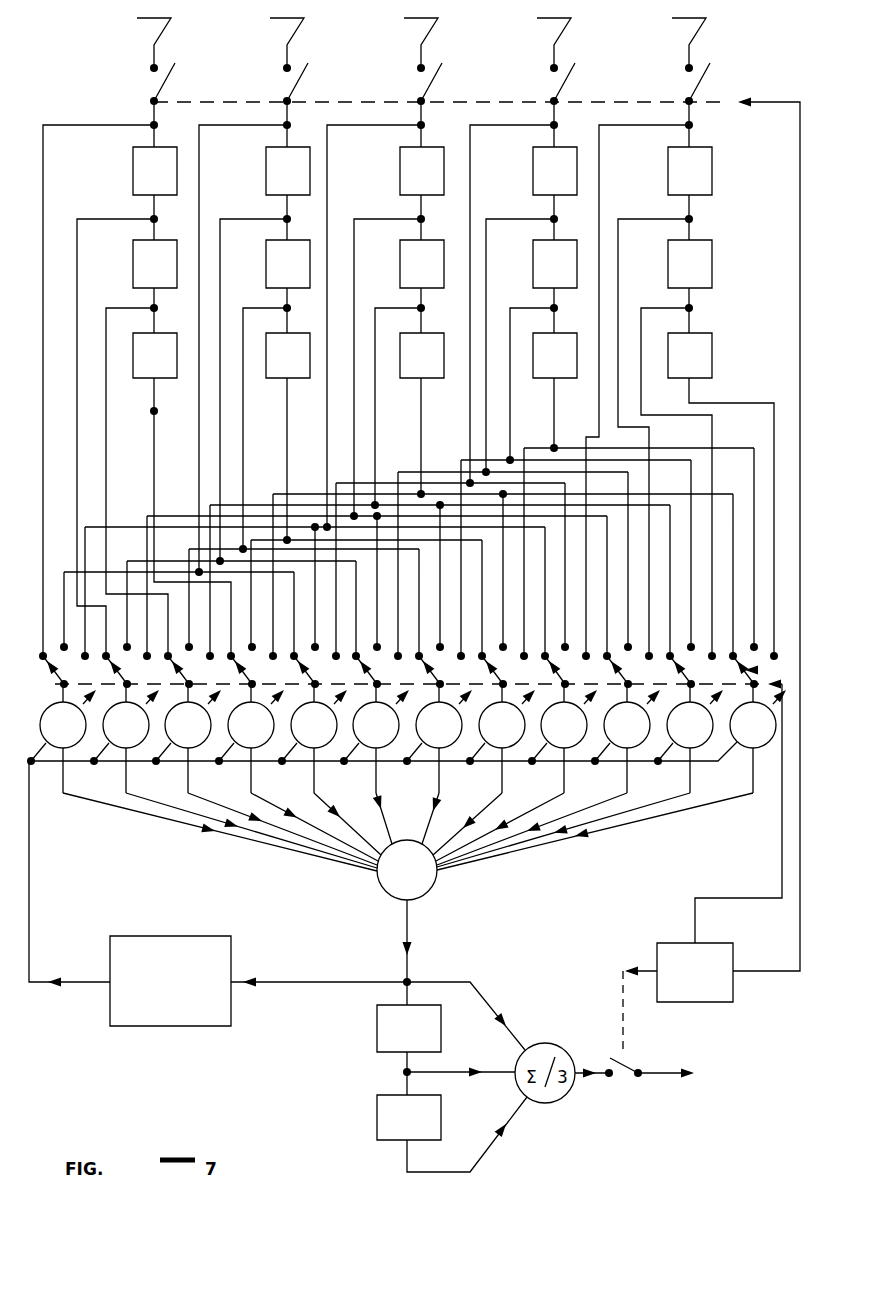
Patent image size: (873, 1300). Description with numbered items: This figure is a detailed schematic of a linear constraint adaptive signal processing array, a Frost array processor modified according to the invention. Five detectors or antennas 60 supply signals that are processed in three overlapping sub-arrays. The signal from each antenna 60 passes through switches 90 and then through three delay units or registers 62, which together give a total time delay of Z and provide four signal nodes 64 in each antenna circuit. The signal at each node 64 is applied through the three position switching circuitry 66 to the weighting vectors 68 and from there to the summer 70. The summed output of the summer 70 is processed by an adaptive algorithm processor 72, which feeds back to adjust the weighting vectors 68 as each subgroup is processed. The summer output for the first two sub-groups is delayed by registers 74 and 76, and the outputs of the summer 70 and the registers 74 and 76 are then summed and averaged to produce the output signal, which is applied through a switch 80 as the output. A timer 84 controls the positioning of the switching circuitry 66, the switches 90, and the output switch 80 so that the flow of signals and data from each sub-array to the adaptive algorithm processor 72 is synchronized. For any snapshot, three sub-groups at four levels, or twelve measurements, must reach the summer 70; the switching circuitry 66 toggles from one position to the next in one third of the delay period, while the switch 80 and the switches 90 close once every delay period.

The antennas 60 is at (406, 10).
The delay units 62 is at (134, 152).
The signal nodes 64 is at (152, 125).
The three position switching circuitry 66 is at (50, 681).
The weighting vectors 68 is at (763, 756).
The summer 70 is at (430, 893).
The adaptive algorithm processor 72 is at (183, 938).
The register 74 is at (378, 1013).
The register 76 is at (378, 1106).
The switch 80 is at (626, 1066).
The timer 84 is at (716, 1001).
The switches 90 is at (717, 79).